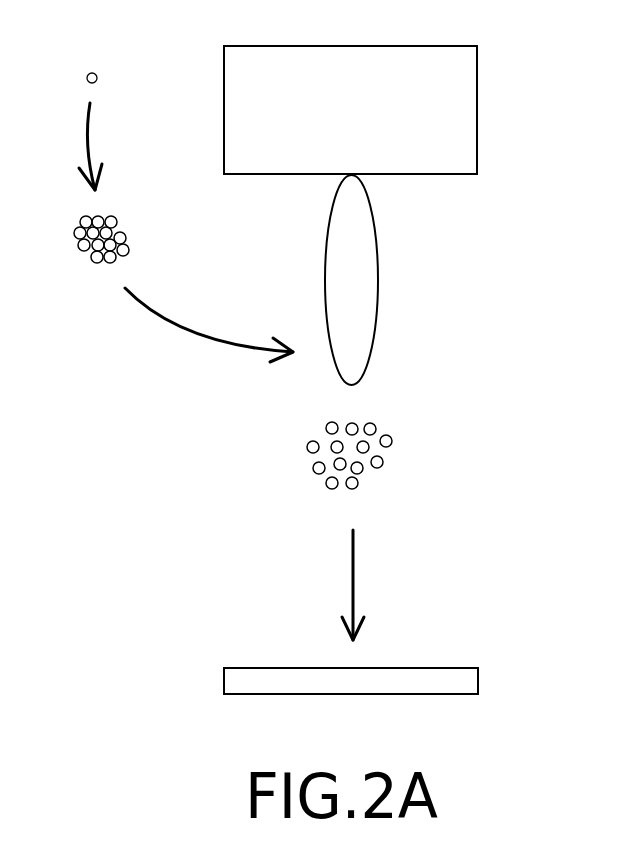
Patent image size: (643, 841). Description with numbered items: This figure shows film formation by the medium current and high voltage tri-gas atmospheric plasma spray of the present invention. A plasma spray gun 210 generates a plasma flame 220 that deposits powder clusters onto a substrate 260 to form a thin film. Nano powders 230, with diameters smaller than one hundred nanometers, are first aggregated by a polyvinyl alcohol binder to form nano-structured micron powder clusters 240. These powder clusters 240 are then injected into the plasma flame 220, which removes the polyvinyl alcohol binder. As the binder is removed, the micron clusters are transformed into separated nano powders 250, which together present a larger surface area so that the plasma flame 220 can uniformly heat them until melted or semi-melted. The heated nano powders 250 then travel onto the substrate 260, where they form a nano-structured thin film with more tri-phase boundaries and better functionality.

The plasma spray gun 210 is at (350, 110).
The plasma flame 220 is at (362, 278).
The nano powders 230 is at (96, 74).
The nano-structured micron powder clusters 240 is at (71, 248).
The separated nano powders 250 is at (283, 478).
The substrate 260 is at (465, 678).